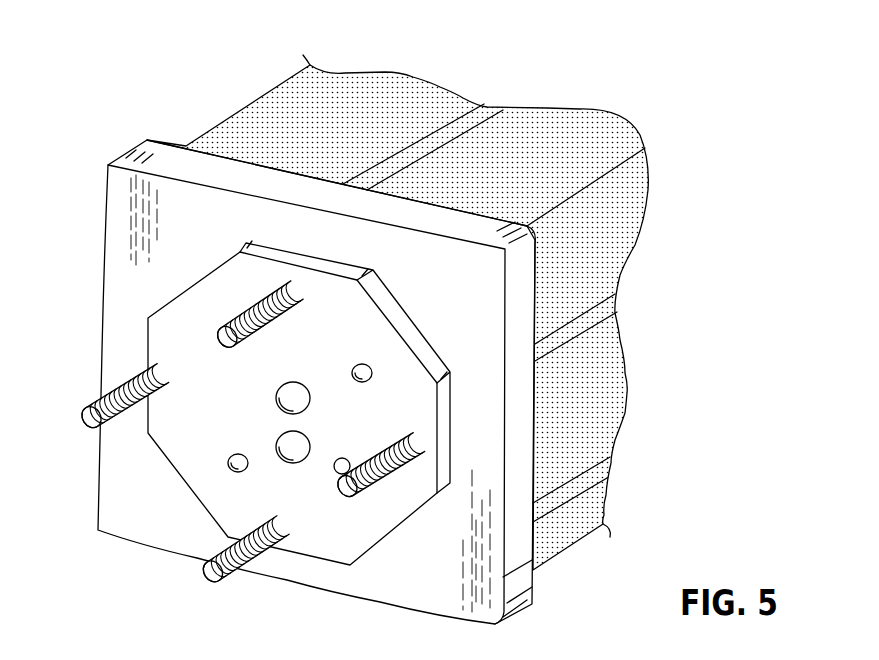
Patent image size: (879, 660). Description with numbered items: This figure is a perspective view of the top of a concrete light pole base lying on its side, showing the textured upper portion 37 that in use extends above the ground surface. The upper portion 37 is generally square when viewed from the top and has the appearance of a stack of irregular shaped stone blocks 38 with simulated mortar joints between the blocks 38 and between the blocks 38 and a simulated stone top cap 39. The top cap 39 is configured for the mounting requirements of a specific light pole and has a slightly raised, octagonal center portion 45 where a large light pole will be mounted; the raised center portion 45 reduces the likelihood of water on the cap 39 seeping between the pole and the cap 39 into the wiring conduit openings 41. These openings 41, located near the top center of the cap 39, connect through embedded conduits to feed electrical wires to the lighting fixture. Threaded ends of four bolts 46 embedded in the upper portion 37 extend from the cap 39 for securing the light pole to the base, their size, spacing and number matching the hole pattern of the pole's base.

The textured upper portion 37 is at (645, 411).
The stone blocks 38 is at (603, 353).
The top cap 39 is at (520, 609).
The wiring conduit openings 41 is at (277, 447).
The raised center portion 45 is at (450, 417).
The bolts 46 is at (240, 310).